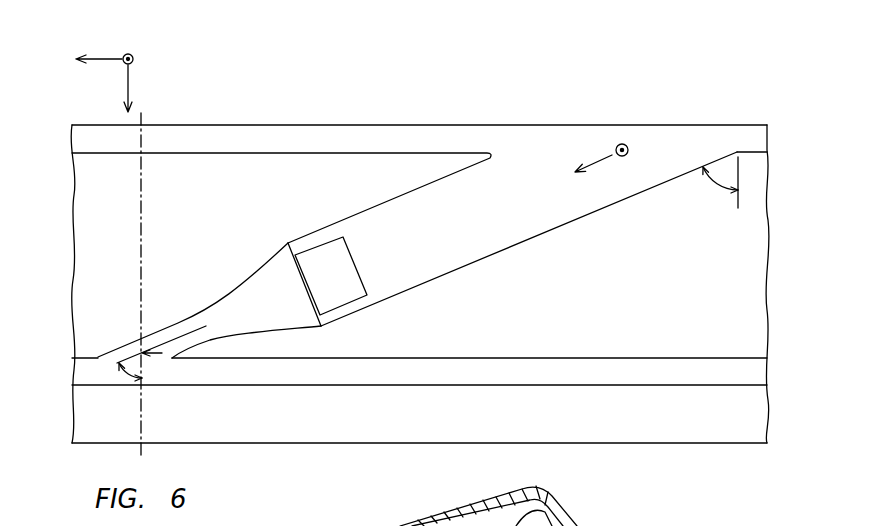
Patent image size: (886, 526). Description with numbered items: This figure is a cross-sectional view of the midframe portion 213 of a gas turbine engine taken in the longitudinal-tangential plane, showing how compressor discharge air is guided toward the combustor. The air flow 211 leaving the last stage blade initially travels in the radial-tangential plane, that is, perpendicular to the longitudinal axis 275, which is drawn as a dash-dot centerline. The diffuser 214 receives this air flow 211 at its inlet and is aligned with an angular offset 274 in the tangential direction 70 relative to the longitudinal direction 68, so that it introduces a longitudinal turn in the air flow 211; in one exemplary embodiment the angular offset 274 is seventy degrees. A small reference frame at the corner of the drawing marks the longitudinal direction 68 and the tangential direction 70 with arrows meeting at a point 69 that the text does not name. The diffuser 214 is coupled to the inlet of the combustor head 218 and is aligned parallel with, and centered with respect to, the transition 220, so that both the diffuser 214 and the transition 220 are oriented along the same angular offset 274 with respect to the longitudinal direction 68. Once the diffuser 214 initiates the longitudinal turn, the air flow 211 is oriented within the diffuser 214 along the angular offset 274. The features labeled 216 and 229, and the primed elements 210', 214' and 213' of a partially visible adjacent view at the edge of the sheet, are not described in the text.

The longitudinal direction 68 is at (125, 77).
The axis origin 69 is at (134, 57).
The tangential direction 70 is at (114, 56).
The air flow 211 is at (590, 163).
The midframe portion 213 is at (419, 211).
The diffuser 214 is at (404, 239).
The band 216 is at (308, 231).
The combustor head 218 is at (352, 287).
The transition 220 is at (290, 313).
The edge 229 is at (753, 138).
The angular offset 274 is at (129, 375).
The longitudinal axis 275 is at (142, 230).
The strap (alternate) 210' is at (540, 505).
The strip (alternate) 214' is at (331, 516).
The strap assembly (alternate) 213' is at (698, 520).